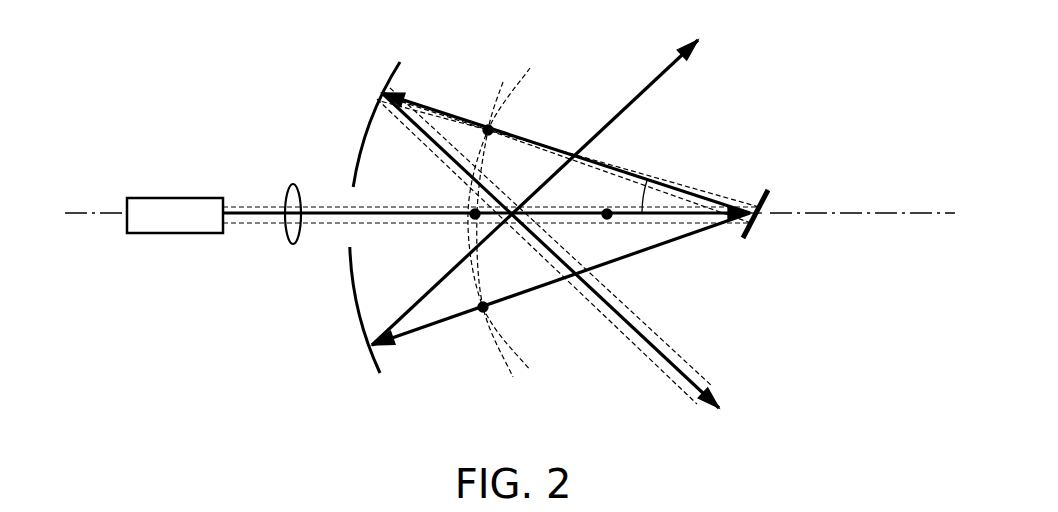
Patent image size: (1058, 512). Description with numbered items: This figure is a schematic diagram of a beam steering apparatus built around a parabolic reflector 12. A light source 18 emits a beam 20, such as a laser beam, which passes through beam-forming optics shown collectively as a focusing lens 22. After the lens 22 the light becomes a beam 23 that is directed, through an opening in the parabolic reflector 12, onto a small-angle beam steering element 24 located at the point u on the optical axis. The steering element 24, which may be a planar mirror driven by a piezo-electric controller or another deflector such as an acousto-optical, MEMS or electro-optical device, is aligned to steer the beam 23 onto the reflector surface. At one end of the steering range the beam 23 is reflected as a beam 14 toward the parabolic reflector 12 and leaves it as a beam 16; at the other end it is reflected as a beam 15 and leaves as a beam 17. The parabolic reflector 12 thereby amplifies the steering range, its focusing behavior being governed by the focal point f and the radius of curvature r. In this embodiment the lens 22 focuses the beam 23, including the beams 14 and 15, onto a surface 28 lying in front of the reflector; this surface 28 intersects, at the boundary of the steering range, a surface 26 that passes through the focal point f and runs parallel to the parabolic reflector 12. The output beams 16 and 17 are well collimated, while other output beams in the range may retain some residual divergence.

The parabolic reflector 12 is at (395, 72).
The beam 14 is at (660, 184).
The beam 15 is at (663, 245).
The beam 16 is at (665, 357).
The beam 17 is at (653, 81).
The light source 18 is at (187, 233).
The beam 20 is at (255, 217).
The focusing lens 22 is at (290, 244).
The beam 23 is at (327, 218).
The small-angle beam steering element 24 is at (766, 192).
The surface 26 is at (502, 82).
The surface 28 is at (510, 347).
The focal point f is at (451, 293).
The focal point of beam 14 f' is at (521, 70).
The focal point of beam 15 f'' is at (525, 348).
The radius of curvature r is at (607, 220).
The point u is at (752, 218).